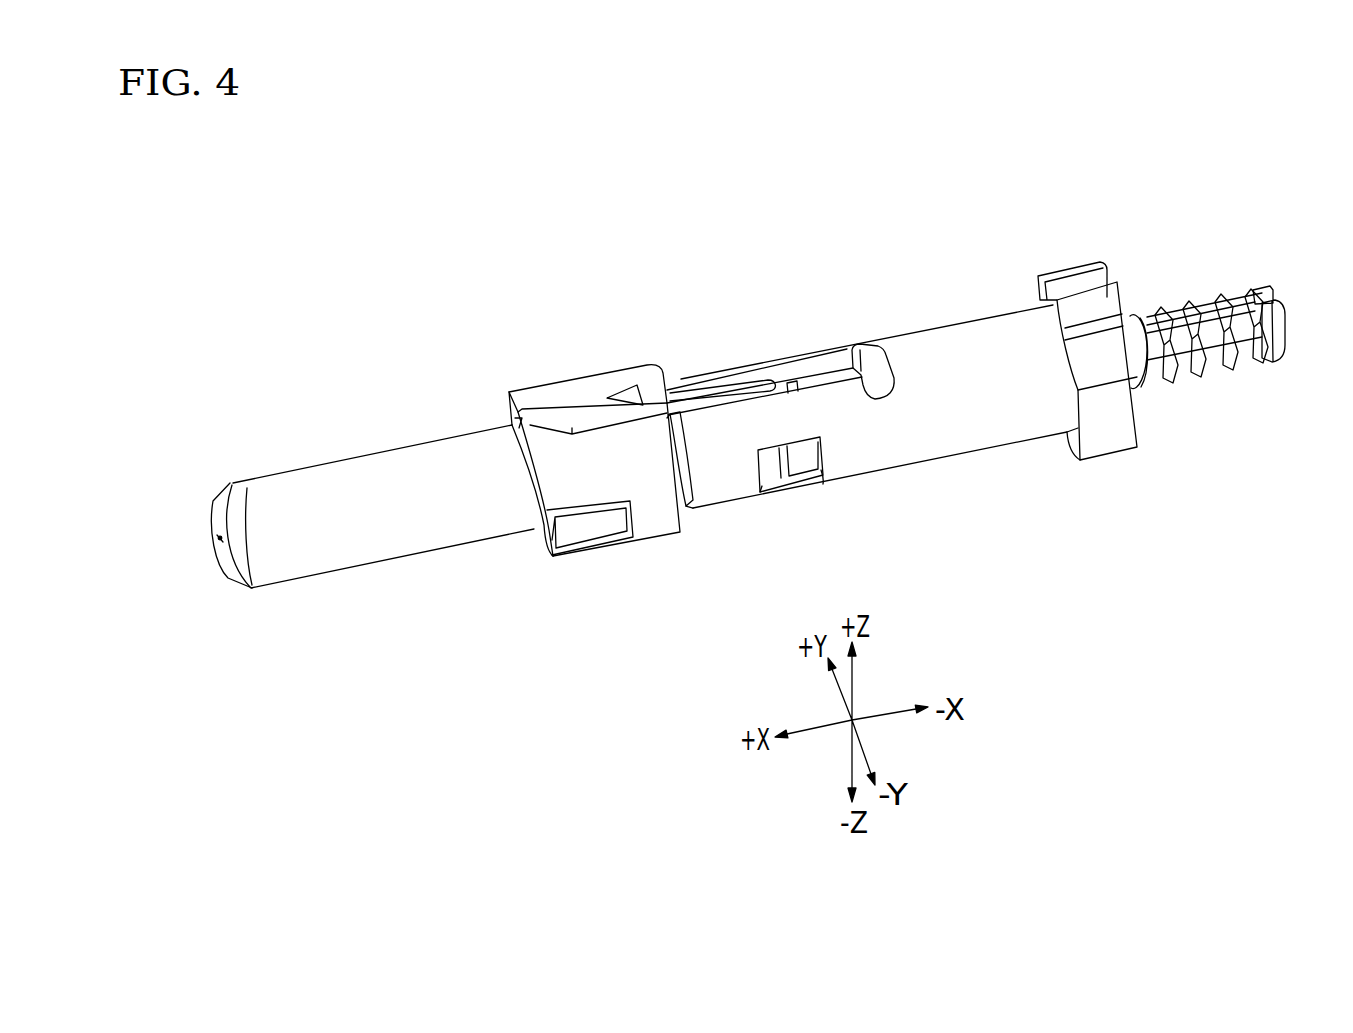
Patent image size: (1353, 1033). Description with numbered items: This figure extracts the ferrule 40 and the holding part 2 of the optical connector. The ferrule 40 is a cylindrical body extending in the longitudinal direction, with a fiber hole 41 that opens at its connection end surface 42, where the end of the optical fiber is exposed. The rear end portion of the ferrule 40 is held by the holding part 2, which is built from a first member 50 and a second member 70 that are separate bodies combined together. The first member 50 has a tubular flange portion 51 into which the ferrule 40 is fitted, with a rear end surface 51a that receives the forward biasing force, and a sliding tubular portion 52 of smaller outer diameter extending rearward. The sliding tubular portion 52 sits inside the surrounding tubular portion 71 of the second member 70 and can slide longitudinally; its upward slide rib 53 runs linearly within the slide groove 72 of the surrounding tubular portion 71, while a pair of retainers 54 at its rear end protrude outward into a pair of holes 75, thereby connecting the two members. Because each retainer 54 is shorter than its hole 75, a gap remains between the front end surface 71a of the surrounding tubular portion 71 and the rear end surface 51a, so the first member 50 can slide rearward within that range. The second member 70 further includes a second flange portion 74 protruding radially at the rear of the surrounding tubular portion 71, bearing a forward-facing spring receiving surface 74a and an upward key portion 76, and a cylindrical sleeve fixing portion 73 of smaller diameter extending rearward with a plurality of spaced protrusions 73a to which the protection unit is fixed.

The holding part 2 is at (717, 143).
The ferrule 40 is at (333, 483).
The fiber hole 41 is at (220, 541).
The connection end surface 42 is at (218, 523).
The first member 50 is at (642, 382).
The flange portion 51 is at (655, 525).
The rear end surface 51a is at (660, 372).
The sliding tubular portion 52 is at (685, 463).
The slide rib 53 is at (732, 390).
The retainer 54 is at (770, 476).
The second member 70 is at (976, 386).
The surrounding tubular portion 71 is at (867, 449).
The front end surface 71a is at (687, 508).
The slide groove 72 is at (848, 372).
The sleeve fixing portion 73 is at (1207, 351).
The protrusion 73a is at (1207, 378).
The second flange portion 74 is at (1067, 370).
The spring receiving surface 74a is at (1070, 440).
The hole 75 is at (817, 484).
The key portion 76 is at (1115, 298).